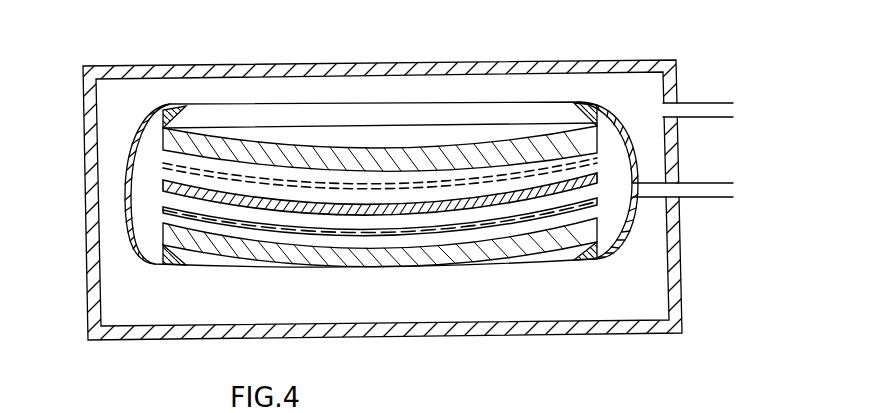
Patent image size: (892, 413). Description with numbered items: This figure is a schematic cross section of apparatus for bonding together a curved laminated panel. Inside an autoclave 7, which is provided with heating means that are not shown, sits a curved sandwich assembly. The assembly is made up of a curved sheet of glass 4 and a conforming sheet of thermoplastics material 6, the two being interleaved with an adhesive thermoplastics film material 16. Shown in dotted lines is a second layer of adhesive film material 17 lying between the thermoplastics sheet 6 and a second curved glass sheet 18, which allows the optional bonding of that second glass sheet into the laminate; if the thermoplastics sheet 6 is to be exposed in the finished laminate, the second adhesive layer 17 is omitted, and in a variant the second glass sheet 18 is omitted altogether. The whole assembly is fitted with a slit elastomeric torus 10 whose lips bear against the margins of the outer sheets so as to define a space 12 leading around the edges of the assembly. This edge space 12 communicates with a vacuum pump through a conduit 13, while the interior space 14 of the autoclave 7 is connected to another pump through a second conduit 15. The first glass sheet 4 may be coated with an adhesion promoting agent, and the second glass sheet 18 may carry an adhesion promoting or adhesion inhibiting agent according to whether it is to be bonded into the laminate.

The curved sheet of glass 4 is at (290, 258).
The sheet of thermoplastics material 6 is at (348, 218).
The autoclave 7 is at (675, 273).
The torus 10 is at (597, 100).
The space 12 is at (618, 170).
The conduit 13 is at (724, 197).
The interior space 14 is at (627, 83).
The second conduit 15 is at (710, 103).
The adhesive thermoplastics film material 16 is at (440, 228).
The second layer of adhesive film material 17 is at (205, 168).
The second curved glass sheet 18 is at (268, 153).